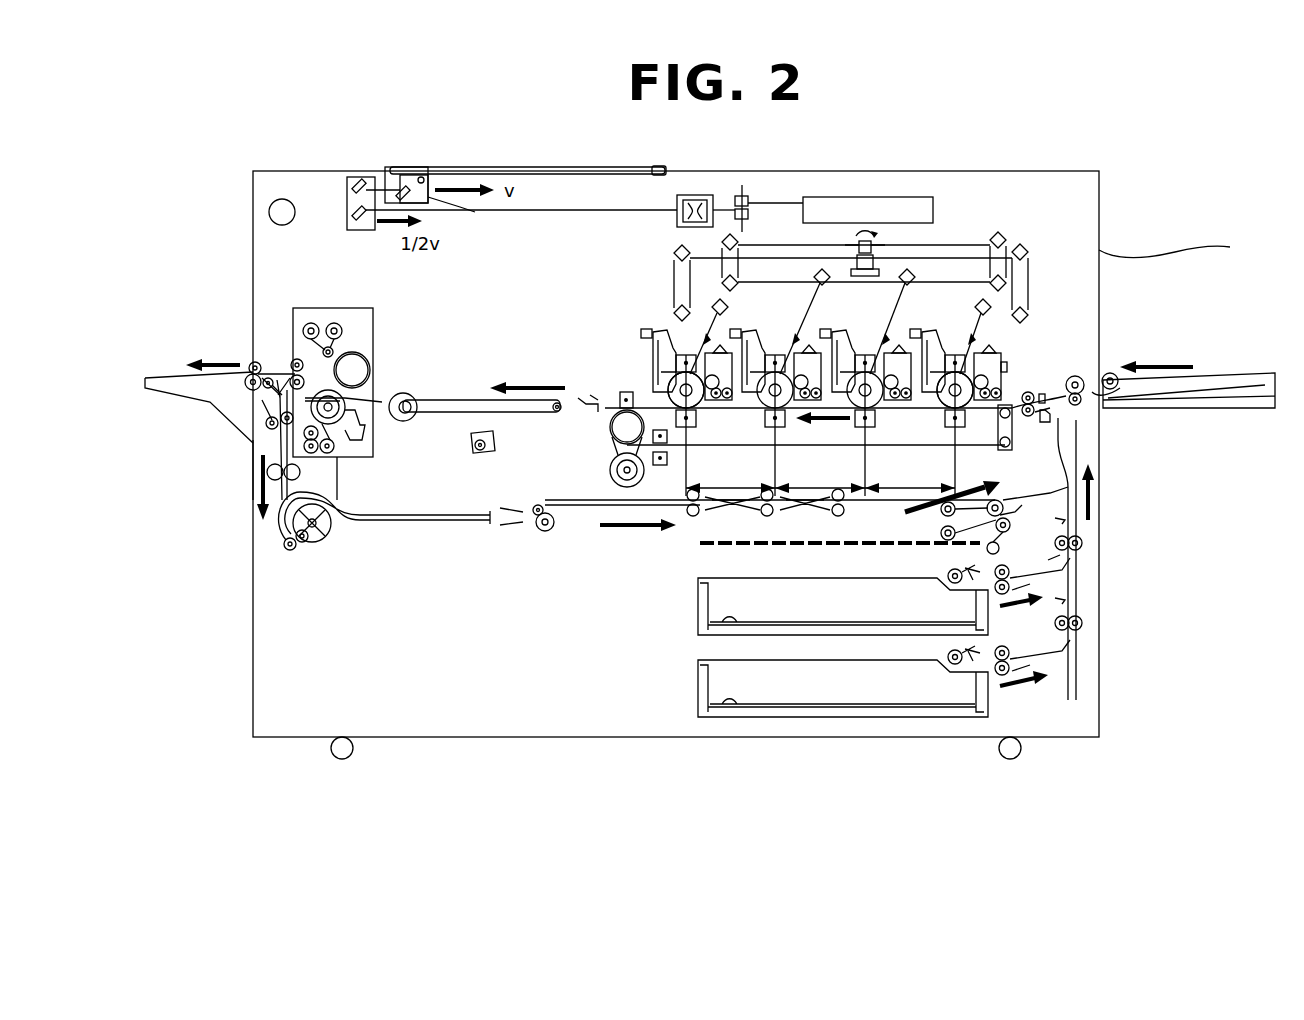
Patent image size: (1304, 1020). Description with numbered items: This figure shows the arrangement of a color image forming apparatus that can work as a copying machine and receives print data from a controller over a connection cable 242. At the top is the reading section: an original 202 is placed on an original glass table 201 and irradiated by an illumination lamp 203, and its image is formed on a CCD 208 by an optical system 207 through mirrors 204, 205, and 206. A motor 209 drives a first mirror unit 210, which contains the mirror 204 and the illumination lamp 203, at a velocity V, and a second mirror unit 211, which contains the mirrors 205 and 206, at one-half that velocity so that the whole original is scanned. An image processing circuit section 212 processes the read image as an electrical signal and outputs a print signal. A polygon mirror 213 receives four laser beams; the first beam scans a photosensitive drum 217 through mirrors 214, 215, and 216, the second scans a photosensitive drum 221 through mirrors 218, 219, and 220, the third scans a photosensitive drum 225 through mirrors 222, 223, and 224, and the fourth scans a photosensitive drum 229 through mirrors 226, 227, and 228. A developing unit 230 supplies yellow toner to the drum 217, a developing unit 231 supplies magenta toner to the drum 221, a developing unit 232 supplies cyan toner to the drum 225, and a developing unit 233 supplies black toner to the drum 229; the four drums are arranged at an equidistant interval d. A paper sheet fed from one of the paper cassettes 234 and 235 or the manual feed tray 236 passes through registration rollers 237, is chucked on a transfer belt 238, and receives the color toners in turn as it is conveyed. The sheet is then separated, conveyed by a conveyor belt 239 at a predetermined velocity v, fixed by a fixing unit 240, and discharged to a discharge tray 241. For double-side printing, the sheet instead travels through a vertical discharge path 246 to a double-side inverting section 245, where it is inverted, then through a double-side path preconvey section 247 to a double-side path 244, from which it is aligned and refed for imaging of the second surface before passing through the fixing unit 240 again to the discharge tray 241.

The original glass table 201 is at (658, 167).
The original 202 is at (636, 154).
The illumination lamp 203 is at (424, 167).
The mirror 204 is at (410, 200).
The mirror 205 is at (352, 189).
The mirror 206 is at (350, 215).
The optical system 207 is at (677, 220).
The CCD 208 is at (737, 226).
The motor 209 is at (280, 198).
The first mirror unit 210 is at (462, 210).
The second mirror unit 211 is at (362, 232).
The image processing circuit section 212 is at (866, 197).
The polygon mirror 213 is at (860, 246).
The mirror 214 is at (1024, 250).
The mirror 215 is at (1028, 316).
The mirror 216 is at (990, 315).
The photosensitive drum 217 is at (880, 406).
The mirror 218 is at (998, 233).
The mirror 219 is at (992, 283).
The mirror 220 is at (912, 287).
The photosensitive drum 221 is at (860, 446).
The mirror 222 is at (739, 243).
The mirror 223 is at (739, 284).
The mirror 224 is at (826, 287).
The photosensitive drum 225 is at (712, 402).
The mirror 226 is at (677, 254).
The mirror 227 is at (674, 315).
The mirror 228 is at (727, 307).
The photosensitive drum 229 is at (641, 474).
The developing unit 230 is at (992, 412).
The developing unit 231 is at (874, 420).
The developing unit 232 is at (784, 420).
The developing unit 233 is at (698, 420).
The paper cassette 234 is at (698, 606).
The paper cassette 235 is at (698, 689).
The manual feed tray 236 is at (1165, 408).
The registration rollers 237 is at (1058, 370).
The transfer belt 238 is at (1018, 390).
The conveyor belt 239 is at (455, 400).
The fixing unit 240 is at (378, 323).
The discharge tray 241 is at (168, 378).
The connection cable 242 is at (1158, 252).
The double-side path 244 is at (822, 546).
The double-side inverting section 245 is at (286, 540).
The vertical discharge path 246 is at (300, 468).
The double-side path preconvey section 247 is at (589, 503).